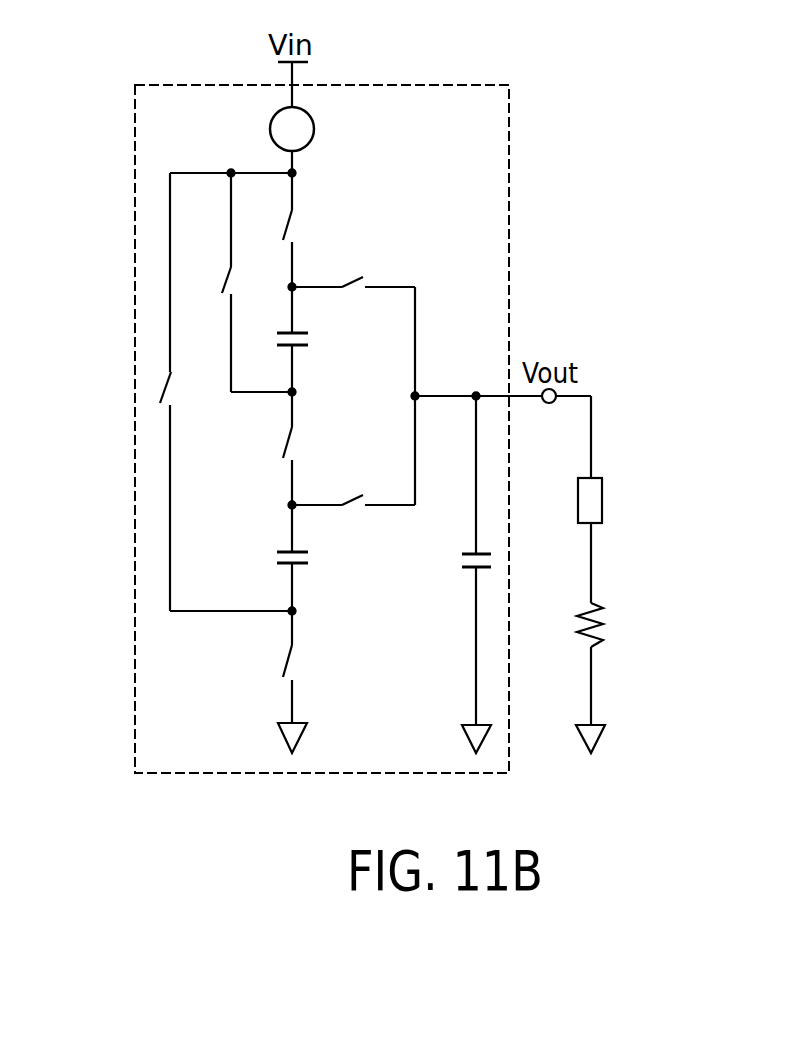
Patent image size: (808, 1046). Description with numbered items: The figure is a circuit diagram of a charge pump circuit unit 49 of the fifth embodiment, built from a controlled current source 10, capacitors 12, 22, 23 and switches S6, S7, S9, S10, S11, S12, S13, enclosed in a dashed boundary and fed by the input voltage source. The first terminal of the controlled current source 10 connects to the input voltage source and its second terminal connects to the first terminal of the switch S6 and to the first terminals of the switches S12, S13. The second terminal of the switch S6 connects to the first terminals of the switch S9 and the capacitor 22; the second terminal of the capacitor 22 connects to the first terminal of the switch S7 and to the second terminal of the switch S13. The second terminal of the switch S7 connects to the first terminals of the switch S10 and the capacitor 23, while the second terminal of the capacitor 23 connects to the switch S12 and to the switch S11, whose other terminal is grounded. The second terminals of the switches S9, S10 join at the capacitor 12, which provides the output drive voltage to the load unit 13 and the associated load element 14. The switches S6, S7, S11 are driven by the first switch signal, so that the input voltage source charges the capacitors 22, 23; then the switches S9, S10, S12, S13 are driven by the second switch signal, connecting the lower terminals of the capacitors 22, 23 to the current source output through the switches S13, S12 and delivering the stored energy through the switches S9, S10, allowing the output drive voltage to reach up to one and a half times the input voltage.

The controlled current source 10 is at (314, 129).
The charge pump circuit unit 49 is at (509, 187).
The capacitor 22 is at (312, 342).
The capacitor 23 is at (312, 563).
The capacitor 12 is at (470, 553).
The load unit 13 is at (603, 503).
The load resistor 14 is at (607, 623).
The switch S6 is at (305, 230).
The switch S7 is at (305, 448).
The switch S9 is at (353, 373).
The switch S10 is at (353, 483).
The switch S11 is at (311, 667).
The switch S12 is at (226, 392).
The switch S13 is at (257, 282).